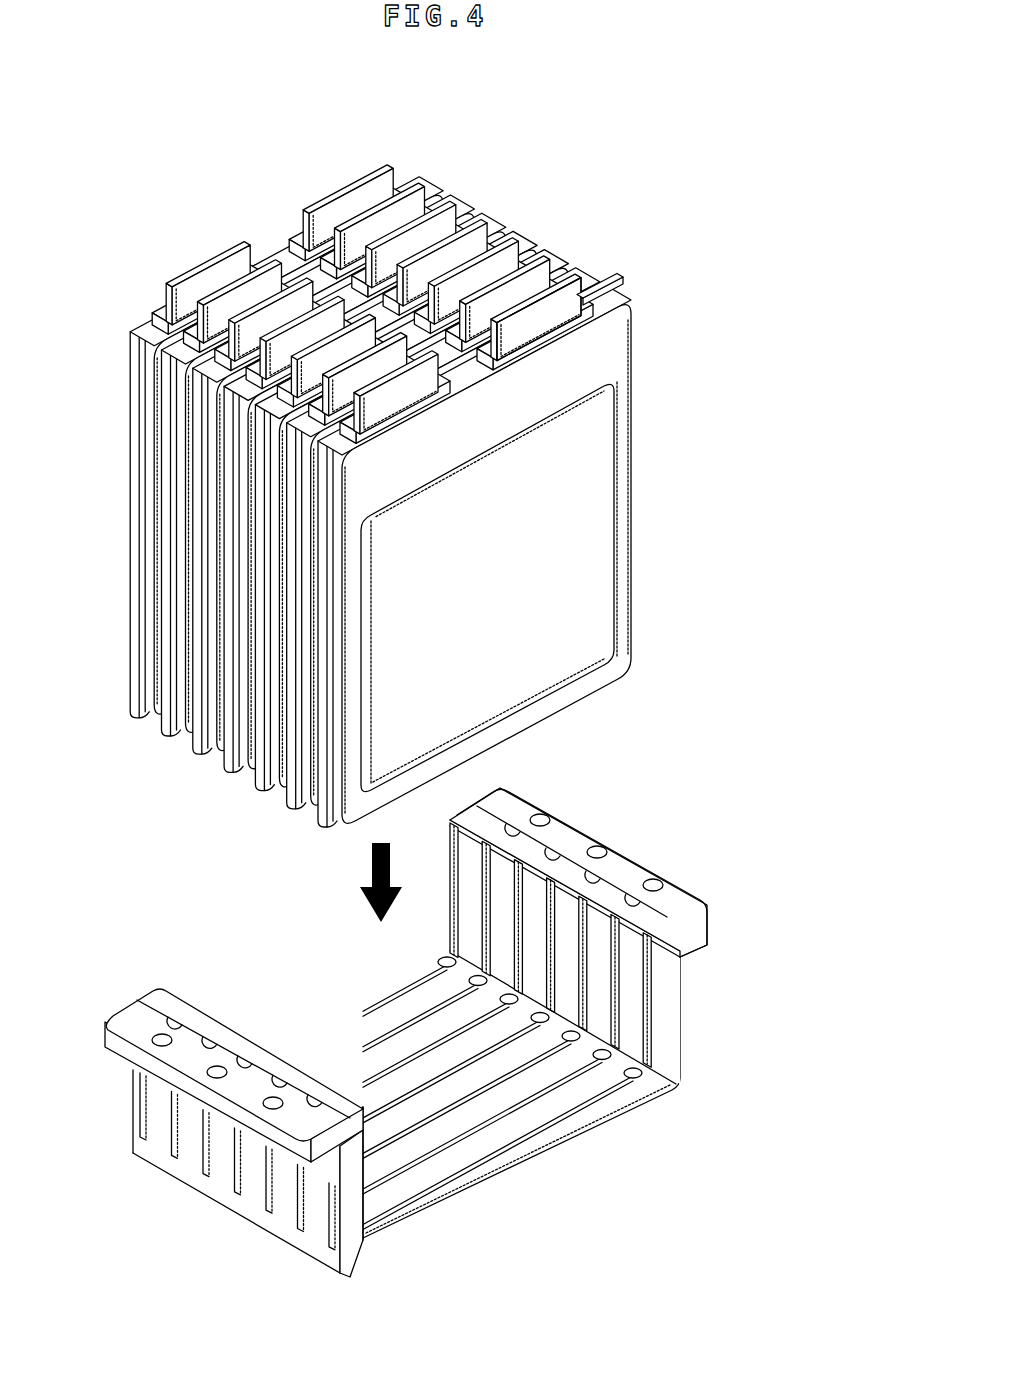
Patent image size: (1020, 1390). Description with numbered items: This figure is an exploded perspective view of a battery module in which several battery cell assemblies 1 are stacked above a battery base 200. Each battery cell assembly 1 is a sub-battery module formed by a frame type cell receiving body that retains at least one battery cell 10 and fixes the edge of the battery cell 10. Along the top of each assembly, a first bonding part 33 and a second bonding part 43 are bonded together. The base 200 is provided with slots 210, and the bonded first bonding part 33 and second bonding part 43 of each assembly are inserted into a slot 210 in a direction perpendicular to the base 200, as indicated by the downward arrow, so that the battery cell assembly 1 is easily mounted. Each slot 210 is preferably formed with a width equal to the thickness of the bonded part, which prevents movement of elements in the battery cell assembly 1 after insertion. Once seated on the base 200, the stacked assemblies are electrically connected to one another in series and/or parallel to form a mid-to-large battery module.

The battery cell assembly 1 is at (412, 459).
The battery cell 10 is at (590, 481).
The first bonding part 33 is at (628, 288).
The second bonding part 43 is at (606, 287).
The battery base 200 is at (437, 1032).
The slot 210 is at (598, 915).